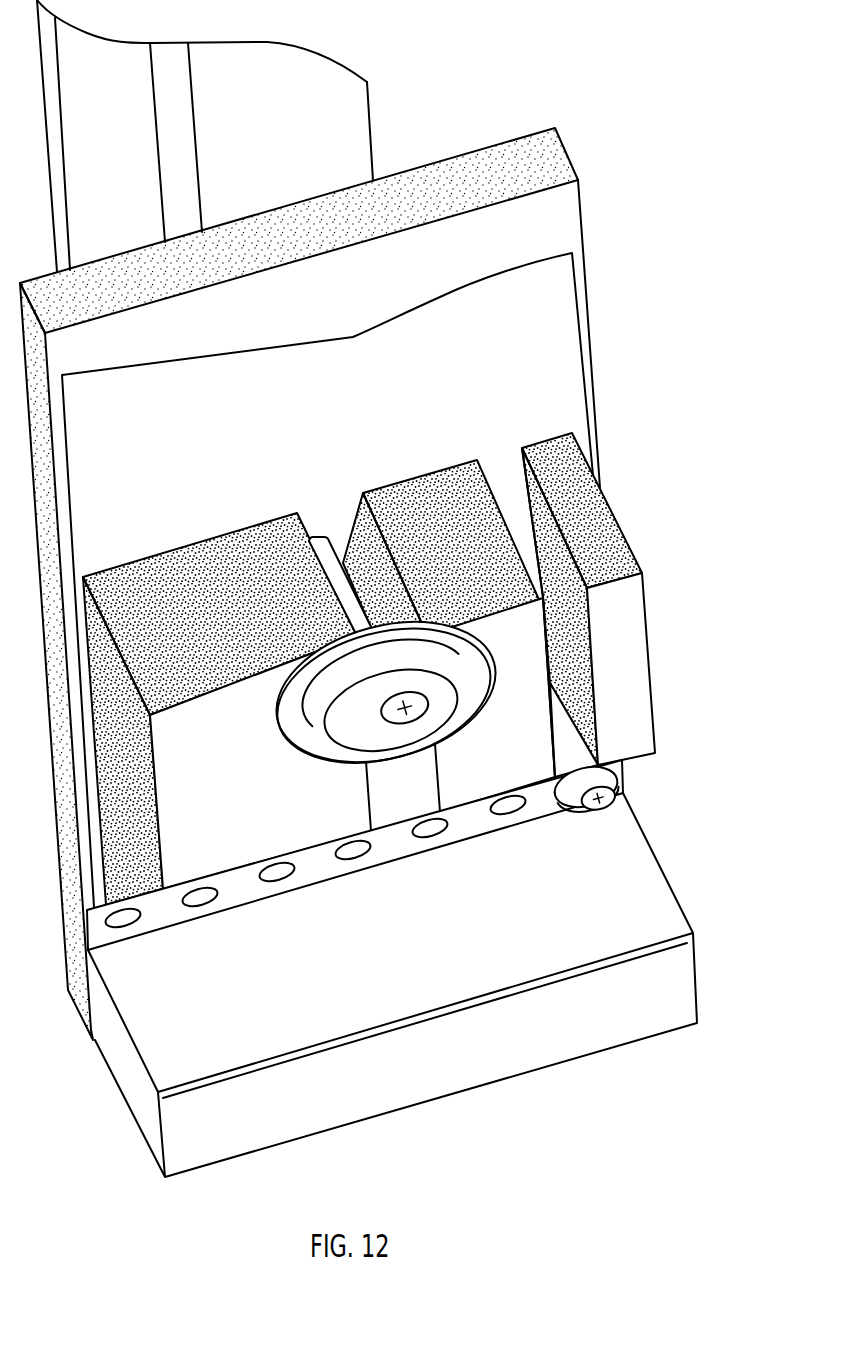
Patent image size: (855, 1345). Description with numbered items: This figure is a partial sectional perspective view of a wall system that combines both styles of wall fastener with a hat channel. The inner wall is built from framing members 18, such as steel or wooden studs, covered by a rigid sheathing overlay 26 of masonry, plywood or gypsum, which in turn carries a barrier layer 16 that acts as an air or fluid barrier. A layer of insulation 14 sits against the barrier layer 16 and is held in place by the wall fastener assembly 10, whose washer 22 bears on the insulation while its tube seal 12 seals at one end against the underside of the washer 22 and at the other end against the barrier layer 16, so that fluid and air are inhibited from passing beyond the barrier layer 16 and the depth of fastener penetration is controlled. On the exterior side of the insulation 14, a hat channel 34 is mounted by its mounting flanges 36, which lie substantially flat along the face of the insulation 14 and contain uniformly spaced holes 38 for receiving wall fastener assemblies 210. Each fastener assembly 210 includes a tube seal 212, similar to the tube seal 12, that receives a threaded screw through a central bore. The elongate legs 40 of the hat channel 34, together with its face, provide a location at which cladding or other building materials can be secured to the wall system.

The wall fastener assembly 10 is at (371, 669).
The tube seal 12 is at (323, 548).
The insulation layer 14 is at (590, 497).
The barrier layer 16 is at (324, 584).
The framing member 18 is at (347, 98).
The washer 22 is at (300, 723).
The sheathing overlay 26 is at (562, 210).
The hat channel 34 is at (379, 985).
The mounting flange 36 is at (168, 913).
The holes 38 is at (277, 873).
The elongate legs 40 is at (142, 1097).
The wall fastener assembly 210 is at (594, 832).
The tube seal 212 is at (568, 748).